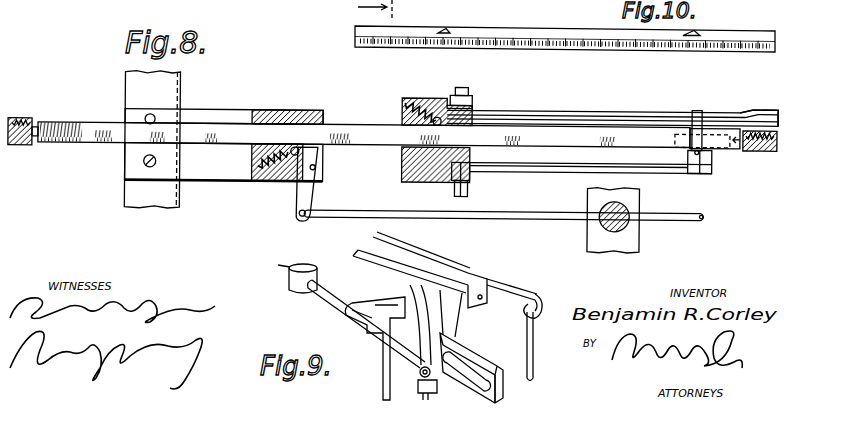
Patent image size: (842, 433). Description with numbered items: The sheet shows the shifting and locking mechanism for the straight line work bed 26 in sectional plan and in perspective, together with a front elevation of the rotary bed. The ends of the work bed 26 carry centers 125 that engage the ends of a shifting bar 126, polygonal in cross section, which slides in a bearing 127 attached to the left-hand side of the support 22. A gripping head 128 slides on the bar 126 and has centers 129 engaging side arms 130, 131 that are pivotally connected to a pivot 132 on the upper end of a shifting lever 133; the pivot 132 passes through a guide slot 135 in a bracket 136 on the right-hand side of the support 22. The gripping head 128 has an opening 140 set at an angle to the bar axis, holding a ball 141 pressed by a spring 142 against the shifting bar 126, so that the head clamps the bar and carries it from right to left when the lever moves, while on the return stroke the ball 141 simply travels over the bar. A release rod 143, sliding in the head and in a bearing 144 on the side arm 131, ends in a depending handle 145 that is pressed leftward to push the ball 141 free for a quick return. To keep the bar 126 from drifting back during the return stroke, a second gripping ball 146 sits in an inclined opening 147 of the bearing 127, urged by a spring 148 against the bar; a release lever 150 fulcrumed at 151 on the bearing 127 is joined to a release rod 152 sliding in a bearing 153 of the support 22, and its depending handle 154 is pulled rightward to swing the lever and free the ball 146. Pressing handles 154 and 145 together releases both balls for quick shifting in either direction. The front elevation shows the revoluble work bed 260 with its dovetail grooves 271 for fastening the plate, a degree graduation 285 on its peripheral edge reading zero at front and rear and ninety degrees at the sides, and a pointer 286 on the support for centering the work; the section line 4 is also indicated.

In FIG. 10, the section line 4 is at (380, 10).
In FIG. 8, the support 22 is at (173, 99).
In FIG. 8, the work bed 26 is at (20, 120).
In FIG. 8, the centers 125 is at (22, 142).
In FIG. 8, the shifting bar 126 is at (104, 143).
In FIG. 9, the shifting bar 126 is at (440, 270).
In FIG. 8, the bearing 127 is at (300, 109).
In FIG. 8, the gripping head 128 is at (402, 171).
In FIG. 8, the centers 129 is at (475, 197).
In FIG. 8, the side arm 130 is at (567, 171).
In FIG. 9, the side arm 130 is at (377, 278).
In FIG. 8, the side arm 131 is at (575, 107).
In FIG. 9, the side arm 131 is at (423, 250).
In FIG. 8, the pivot 132 is at (698, 109).
In FIG. 9, the pivot 132 is at (420, 373).
In FIG. 8, the shifting lever 133 is at (715, 147).
In FIG. 9, the shifting lever 133 is at (422, 396).
In FIG. 9, the guide slot 135 is at (477, 380).
In FIG. 9, the bracket 136 is at (503, 394).
In FIG. 8, the opening 140 is at (428, 94).
In FIG. 8, the ball 141 is at (444, 99).
In FIG. 8, the spring 142 is at (405, 107).
In FIG. 8, the release rod 143 is at (614, 122).
In FIG. 9, the release rod 143 is at (504, 290).
In FIG. 8, the bearing 144 is at (765, 108).
In FIG. 9, the bearing 144 is at (540, 311).
In FIG. 9, the depending handle 145 is at (535, 360).
In FIG. 8, the gripping ball 146 is at (293, 183).
In FIG. 8, the inclined opening 147 is at (250, 183).
In FIG. 8, the spring 148 is at (258, 163).
In FIG. 8, the release lever 150 is at (313, 200).
In FIG. 8, the fulcrum 151 is at (316, 168).
In FIG. 8, the release rod 152 is at (400, 207).
In FIG. 9, the release rod 152 is at (337, 297).
In FIG. 8, the bearing 153 is at (603, 225).
In FIG. 9, the bearing 153 is at (292, 285).
In FIG. 8, the depending handle 154 is at (704, 219).
In FIG. 9, the depending handle 154 is at (385, 371).
In FIG. 10, the revoluble work bed 260 is at (603, 48).
In FIG. 10, the dovetail grooves 271 is at (448, 29).
In FIG. 10, the graduation 285 is at (538, 44).
In FIG. 10, the pointer 286 is at (414, 1).